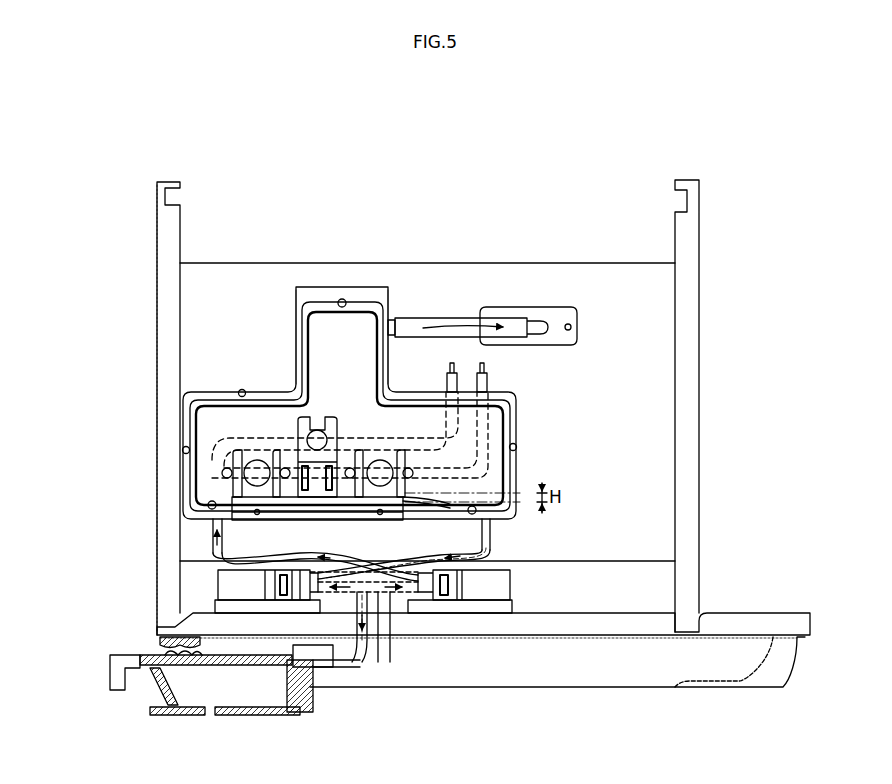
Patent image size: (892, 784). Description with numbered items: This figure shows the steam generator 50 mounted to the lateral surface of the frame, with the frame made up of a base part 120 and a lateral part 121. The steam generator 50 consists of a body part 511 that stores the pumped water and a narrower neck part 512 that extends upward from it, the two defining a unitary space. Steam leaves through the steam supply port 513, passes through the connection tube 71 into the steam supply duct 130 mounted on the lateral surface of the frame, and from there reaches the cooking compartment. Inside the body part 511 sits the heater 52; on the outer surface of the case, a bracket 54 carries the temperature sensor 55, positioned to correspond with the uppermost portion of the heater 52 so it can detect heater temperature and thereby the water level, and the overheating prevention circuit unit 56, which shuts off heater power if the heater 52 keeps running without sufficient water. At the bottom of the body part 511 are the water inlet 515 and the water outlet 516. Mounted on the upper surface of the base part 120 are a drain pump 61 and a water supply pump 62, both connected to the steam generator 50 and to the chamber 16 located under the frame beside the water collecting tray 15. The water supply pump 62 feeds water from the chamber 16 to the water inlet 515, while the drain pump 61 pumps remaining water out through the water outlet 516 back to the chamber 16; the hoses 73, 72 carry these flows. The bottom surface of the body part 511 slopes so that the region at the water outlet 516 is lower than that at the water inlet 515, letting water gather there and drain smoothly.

The lateral part 121 is at (247, 280).
The base part 120 is at (193, 625).
The steam generator 50 is at (342, 371).
The body part 511 is at (207, 420).
The neck part 512 is at (323, 348).
The steam supply port 513 is at (395, 318).
The heater 52 is at (496, 379).
The bracket 54 is at (232, 497).
The temperature sensor 55 is at (316, 430).
The overheating prevention circuit unit 56 is at (230, 465).
The connection tube 71 is at (463, 325).
The steam supply duct 130 is at (535, 318).
The water inlet 515 is at (215, 522).
The water outlet 516 is at (478, 525).
The hose 73 is at (220, 538).
The hose 72 is at (492, 552).
The drain pump 61 is at (227, 585).
The water supply pump 62 is at (500, 583).
The water collecting tray 15 is at (140, 653).
The chamber 16 is at (160, 692).